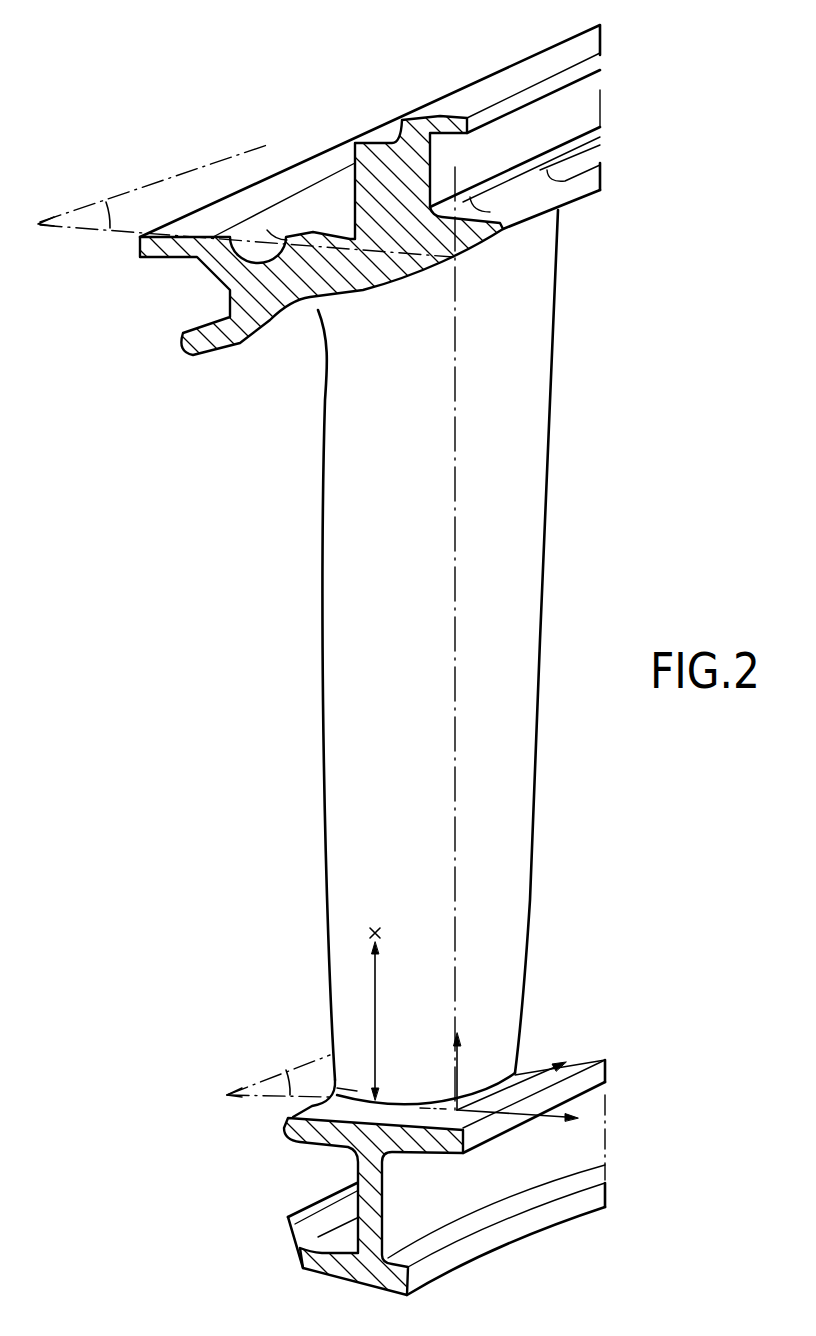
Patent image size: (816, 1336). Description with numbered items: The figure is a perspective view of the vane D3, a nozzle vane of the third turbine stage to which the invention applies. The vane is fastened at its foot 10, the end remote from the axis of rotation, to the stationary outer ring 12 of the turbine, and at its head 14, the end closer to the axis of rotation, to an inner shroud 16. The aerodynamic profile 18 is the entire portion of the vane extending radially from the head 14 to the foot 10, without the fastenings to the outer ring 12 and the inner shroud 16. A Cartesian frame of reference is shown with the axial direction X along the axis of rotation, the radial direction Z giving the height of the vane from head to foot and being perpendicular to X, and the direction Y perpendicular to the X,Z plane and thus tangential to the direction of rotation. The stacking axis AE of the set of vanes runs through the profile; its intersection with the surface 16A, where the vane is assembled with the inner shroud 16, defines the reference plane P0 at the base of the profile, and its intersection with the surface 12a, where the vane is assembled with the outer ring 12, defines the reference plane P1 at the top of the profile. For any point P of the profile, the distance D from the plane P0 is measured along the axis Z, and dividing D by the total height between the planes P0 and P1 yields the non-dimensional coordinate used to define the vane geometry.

The foot 10 is at (325, 313).
The outer ring 12 is at (240, 288).
The surface of assembly with outer ring 12a is at (372, 290).
The head 14 is at (330, 1060).
The inner shroud 16 is at (364, 1166).
The surface of assembly with inner shroud 16A is at (421, 1113).
The aerodynamic profile 18 is at (347, 643).
The stacking axis AE is at (456, 497).
The vane D3 is at (412, 623).
The distance D is at (385, 1021).
The point P is at (387, 936).
The reference plane P0 is at (273, 1082).
The reference plane P1 is at (94, 204).
The axial direction X is at (517, 1133).
The tangential direction Y is at (511, 1070).
The radial direction Z is at (446, 1067).